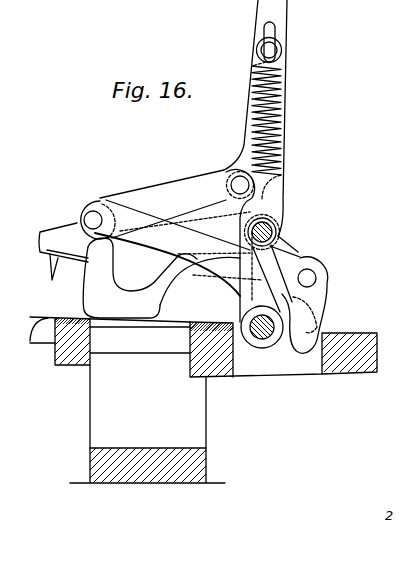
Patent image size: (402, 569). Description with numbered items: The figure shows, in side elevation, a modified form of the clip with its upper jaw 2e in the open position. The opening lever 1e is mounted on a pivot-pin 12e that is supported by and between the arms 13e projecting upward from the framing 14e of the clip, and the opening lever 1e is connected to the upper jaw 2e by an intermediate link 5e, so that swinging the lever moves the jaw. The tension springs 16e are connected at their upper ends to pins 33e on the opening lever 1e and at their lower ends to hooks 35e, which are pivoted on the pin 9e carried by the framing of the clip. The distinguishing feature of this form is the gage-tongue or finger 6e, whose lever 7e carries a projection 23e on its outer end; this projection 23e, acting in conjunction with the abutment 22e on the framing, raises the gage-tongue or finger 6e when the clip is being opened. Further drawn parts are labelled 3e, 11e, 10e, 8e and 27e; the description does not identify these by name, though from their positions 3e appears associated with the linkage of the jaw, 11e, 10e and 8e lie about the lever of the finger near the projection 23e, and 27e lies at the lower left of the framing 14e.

The opening lever 1e is at (272, 13).
The pins 33e is at (277, 32).
The tension springs 16e is at (276, 100).
The intermediate link 5e is at (167, 204).
The link 3e is at (172, 248).
The upper jaw 2e is at (60, 251).
The gage-tongue or finger 6e is at (140, 278).
The lever 7e is at (194, 270).
The hooks 35e is at (246, 300).
The pin 9e is at (260, 336).
The pivot-pin 12e is at (277, 233).
The arms 13e is at (285, 246).
The link 11e is at (281, 255).
The link 10e is at (272, 278).
The pivot 8e is at (308, 278).
The projection 23e is at (312, 308).
The abutment 22e is at (322, 336).
The framing 14e is at (343, 362).
The bracket 27e is at (48, 335).